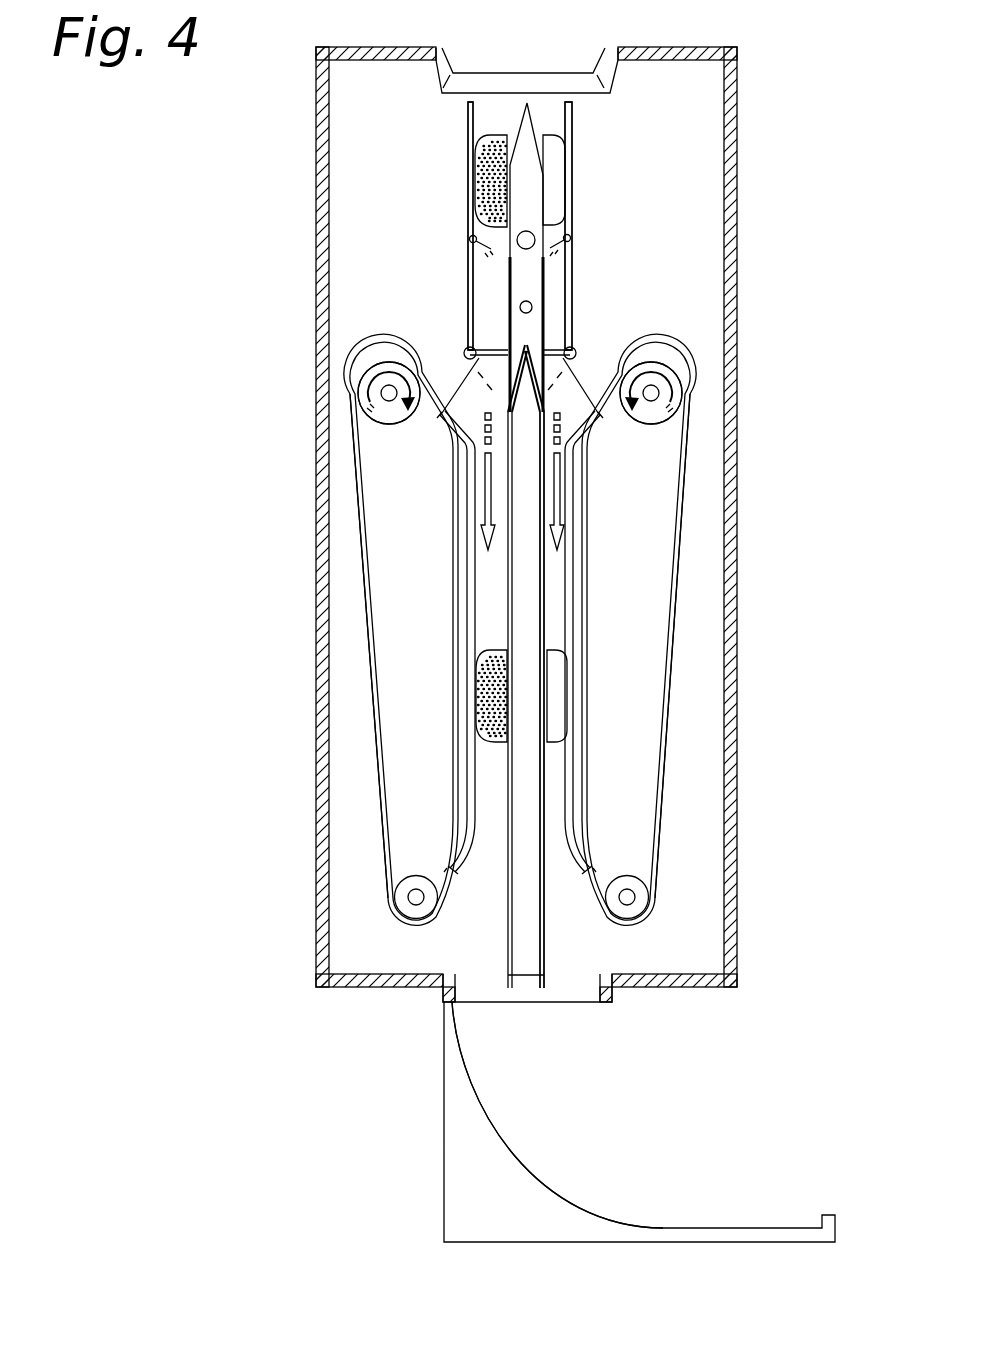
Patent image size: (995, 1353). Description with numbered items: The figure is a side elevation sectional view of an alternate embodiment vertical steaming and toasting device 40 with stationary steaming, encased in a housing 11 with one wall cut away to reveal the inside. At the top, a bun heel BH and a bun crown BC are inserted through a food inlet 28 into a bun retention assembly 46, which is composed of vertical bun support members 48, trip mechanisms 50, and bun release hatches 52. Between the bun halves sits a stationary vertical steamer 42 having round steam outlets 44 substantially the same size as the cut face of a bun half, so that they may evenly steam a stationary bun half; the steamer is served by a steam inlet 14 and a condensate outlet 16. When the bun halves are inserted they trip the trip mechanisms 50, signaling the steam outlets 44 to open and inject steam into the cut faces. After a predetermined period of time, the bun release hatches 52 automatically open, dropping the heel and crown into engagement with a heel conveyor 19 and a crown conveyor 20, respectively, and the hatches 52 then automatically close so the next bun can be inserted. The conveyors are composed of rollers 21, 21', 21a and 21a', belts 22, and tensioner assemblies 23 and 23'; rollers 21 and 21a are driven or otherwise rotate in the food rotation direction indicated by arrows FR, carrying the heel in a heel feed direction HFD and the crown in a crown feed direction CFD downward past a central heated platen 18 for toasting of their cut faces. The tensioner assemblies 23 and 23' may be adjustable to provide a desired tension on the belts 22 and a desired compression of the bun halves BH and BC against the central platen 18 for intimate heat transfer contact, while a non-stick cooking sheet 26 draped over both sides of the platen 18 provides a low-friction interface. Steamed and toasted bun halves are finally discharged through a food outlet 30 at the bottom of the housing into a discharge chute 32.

The vertical steaming and toasting device 40 is at (203, 157).
The housing 11 is at (318, 247).
The food inlet 28 is at (569, 59).
The stationary vertical steamer 42 is at (526, 128).
The bun retention assembly 46 is at (610, 166).
The vertical bun support members 48 is at (474, 186).
The steam outlets 44 is at (543, 272).
The steam inlet 14 is at (517, 238).
The trip mechanisms 50 is at (489, 244).
The condensate outlet 16 is at (533, 307).
The central heated platen 18 is at (540, 791).
The non-stick cooking sheet 26 is at (548, 893).
The roller 21 is at (666, 368).
The roller 21a is at (389, 428).
The roller 21' is at (652, 921).
The roller 21a' is at (391, 921).
The belt 22 is at (372, 648).
The tensioner assembly 23 is at (606, 642).
The tensioner assembly 23' is at (437, 642).
The bun release hatches 52 is at (447, 421).
The crown conveyor 20 is at (352, 779).
The heel conveyor 19 is at (692, 823).
The food outlet 30 is at (574, 1036).
The discharge chute 32 is at (538, 1172).
The bun crown BC is at (483, 162).
The bun heel BH is at (558, 160).
The food rotation direction FR is at (362, 388).
The crown feed direction CFD is at (482, 500).
The heel feed direction HFD is at (562, 502).